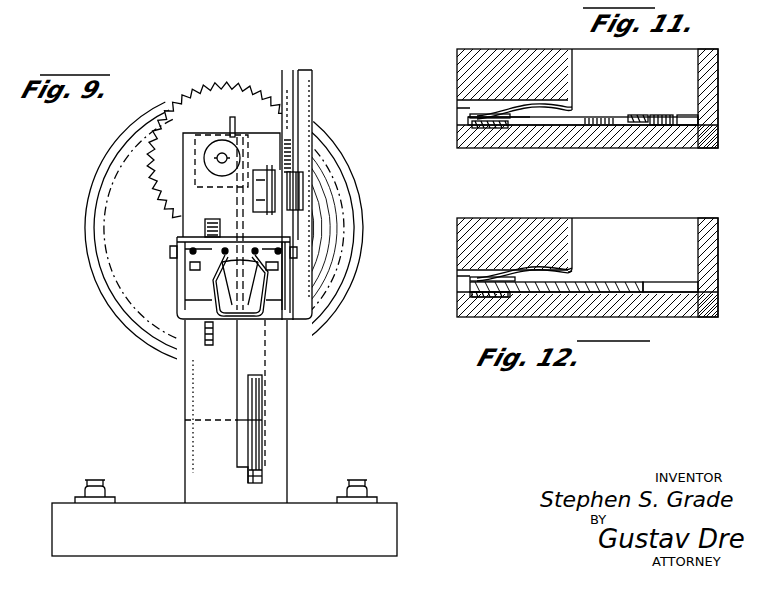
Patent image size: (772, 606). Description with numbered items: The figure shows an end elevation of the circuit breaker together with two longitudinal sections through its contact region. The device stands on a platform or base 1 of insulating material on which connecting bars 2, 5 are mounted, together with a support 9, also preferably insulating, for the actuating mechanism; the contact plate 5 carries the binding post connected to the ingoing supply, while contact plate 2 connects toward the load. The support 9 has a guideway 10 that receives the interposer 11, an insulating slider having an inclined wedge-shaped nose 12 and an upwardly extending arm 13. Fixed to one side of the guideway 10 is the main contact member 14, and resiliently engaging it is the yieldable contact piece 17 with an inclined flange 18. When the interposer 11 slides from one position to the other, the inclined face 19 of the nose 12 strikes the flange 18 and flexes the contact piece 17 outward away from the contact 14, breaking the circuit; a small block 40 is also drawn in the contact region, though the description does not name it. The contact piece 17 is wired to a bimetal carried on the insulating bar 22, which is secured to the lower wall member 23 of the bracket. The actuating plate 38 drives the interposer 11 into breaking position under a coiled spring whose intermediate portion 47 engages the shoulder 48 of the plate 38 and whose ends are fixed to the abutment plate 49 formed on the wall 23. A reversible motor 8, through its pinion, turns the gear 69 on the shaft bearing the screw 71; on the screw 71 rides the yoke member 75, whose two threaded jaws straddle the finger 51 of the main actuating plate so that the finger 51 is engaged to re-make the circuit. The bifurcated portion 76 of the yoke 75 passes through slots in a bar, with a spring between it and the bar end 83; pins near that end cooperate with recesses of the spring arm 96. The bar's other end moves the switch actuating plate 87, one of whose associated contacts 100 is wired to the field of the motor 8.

In FIG. 9, the platform or base 1 is at (290, 541).
In FIG. 9, the connecting bar 2 is at (376, 498).
In FIG. 9, the connecting bar 5 is at (114, 499).
In FIG. 9, the motor 8 is at (360, 228).
In FIG. 11, the support 9 is at (720, 81).
In FIG. 12, the support 9 is at (576, 305).
In FIG. 9, the guideway 10 is at (262, 480).
In FIG. 11, the guideway 10 is at (686, 122).
In FIG. 12, the guideway 10 is at (677, 304).
In FIG. 11, the interposer 11 is at (578, 128).
In FIG. 12, the interposer 11 is at (621, 300).
In FIG. 11, the wedge-shaped nose 12 is at (532, 127).
In FIG. 9, the upwardly extending arm 13 is at (254, 486).
In FIG. 11, the upwardly extending arm 13 is at (659, 128).
In FIG. 9, the main contact member 14 is at (262, 443).
In FIG. 11, the main contact member 14 is at (470, 126).
In FIG. 12, the main contact member 14 is at (474, 316).
In FIG. 9, the yieldable contact piece 17 is at (254, 410).
In FIG. 11, the yieldable contact piece 17 is at (470, 116).
In FIG. 12, the yieldable contact piece 17 is at (470, 279).
In FIG. 11, the inclined flange 18 is at (569, 112).
In FIG. 12, the inclined flange 18 is at (570, 270).
In FIG. 12, the inclined face 19 is at (470, 294).
In FIG. 9, the insulating bar 22 is at (200, 233).
In FIG. 9, the lower wall member 23 is at (200, 233).
In FIG. 9, the actuating plate 38 is at (250, 283).
In FIG. 11, the insulating block 40 is at (642, 115).
In FIG. 9, the intermediate portion 47 is at (232, 322).
In FIG. 9, the shoulder 48 is at (236, 302).
In FIG. 9, the abutment plate 49 is at (215, 270).
In FIG. 9, the arm or finger 51 is at (237, 120).
In FIG. 9, the gear 69 is at (232, 72).
In FIG. 9, the screw 71 is at (222, 172).
In FIG. 9, the yoke member 75 is at (220, 127).
In FIG. 9, the bifurcated portion 76 is at (248, 228).
In FIG. 9, the end of the bar 83 is at (278, 185).
In FIG. 9, the switch actuating plate 87 is at (283, 82).
In FIG. 9, the spring arm 96 is at (293, 196).
In FIG. 9, the contact 100 is at (314, 84).